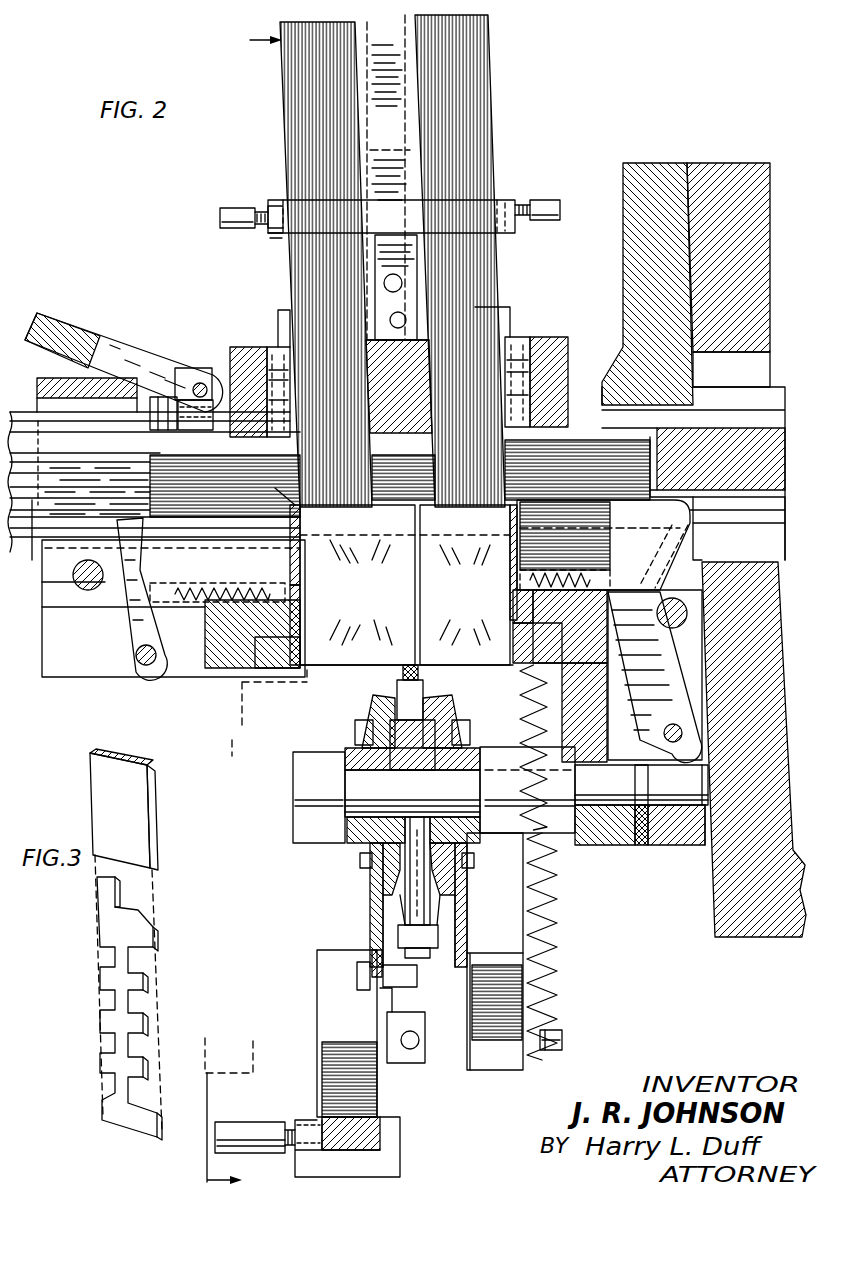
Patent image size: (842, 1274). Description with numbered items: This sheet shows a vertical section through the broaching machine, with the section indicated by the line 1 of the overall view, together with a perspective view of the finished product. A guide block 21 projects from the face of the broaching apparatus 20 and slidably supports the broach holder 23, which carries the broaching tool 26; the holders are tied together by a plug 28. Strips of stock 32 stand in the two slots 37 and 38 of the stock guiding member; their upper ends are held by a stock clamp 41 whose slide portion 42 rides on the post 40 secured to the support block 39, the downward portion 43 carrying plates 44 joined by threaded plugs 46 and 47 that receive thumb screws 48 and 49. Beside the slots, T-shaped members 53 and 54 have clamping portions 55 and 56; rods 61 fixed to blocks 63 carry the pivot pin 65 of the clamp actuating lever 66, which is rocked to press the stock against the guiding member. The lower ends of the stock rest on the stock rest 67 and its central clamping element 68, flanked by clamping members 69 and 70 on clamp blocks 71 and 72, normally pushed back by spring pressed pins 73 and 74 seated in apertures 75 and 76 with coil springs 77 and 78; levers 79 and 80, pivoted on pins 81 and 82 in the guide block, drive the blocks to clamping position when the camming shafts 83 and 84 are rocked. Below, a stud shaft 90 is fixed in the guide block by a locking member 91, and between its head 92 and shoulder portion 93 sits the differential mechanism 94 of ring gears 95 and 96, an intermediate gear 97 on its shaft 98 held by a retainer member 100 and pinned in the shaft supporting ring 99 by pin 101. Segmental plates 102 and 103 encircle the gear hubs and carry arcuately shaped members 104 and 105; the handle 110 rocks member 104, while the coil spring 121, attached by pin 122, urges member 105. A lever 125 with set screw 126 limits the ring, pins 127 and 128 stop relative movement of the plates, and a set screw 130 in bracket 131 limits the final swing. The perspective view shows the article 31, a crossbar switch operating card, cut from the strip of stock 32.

In FIG. 2, the section line 1- 1 is at (256, 611).
In FIG. 2, the broaching apparatus 20 is at (748, 166).
In FIG. 2, the guide block 21 is at (650, 190).
In FIG. 2, the broach holder 23 is at (22, 412).
In FIG. 2, the broaching tool 26 is at (32, 540).
In FIG. 2, the plug 28 is at (740, 430).
In FIG. 3, the article 31 is at (166, 936).
In FIG. 2, the piece of stock 32 is at (320, 296).
In FIG. 3, the piece of stock 32 is at (160, 830).
In FIG. 2, the slot 37 is at (432, 439).
In FIG. 2, the slot 38 is at (399, 395).
In FIG. 2, the support block 39 is at (500, 307).
In FIG. 2, the post 40 is at (400, 246).
In FIG. 2, the stock clamp 41 is at (506, 194).
In FIG. 2, the slide portion 42 is at (410, 105).
In FIG. 2, the downwardly extending portion 43 is at (413, 180).
In FIG. 2, the plate 44 is at (290, 230).
In FIG. 2, the threaded plug 46 is at (505, 231).
In FIG. 2, the threaded plug 47 is at (268, 204).
In FIG. 2, the thumb screw 48 is at (545, 205).
In FIG. 2, the thumb screw 49 is at (225, 216).
In FIG. 2, the T-shaped member 53 is at (238, 352).
In FIG. 2, the T-shaped member 54 is at (566, 350).
In FIG. 2, the clamping portion 55 is at (280, 356).
In FIG. 2, the clamping portion 56 is at (522, 346).
In FIG. 2, the rod 61 is at (165, 396).
In FIG. 2, the block 63 is at (198, 368).
In FIG. 2, the pivot pin 65 is at (194, 385).
In FIG. 2, the clamp actuating lever 66 is at (70, 330).
In FIG. 2, the stock rest 67 is at (325, 668).
In FIG. 2, the central clamping element 68 is at (386, 505).
In FIG. 2, the clamping member 69 is at (520, 505).
In FIG. 2, the clamping member 70 is at (292, 510).
In FIG. 2, the clamp block 71 is at (530, 547).
In FIG. 2, the clamp block 72 is at (285, 557).
In FIG. 2, the spring pressed pin 73 is at (520, 587).
In FIG. 2, the spring pressed pin 74 is at (290, 578).
In FIG. 2, the aperture 75 is at (600, 583).
In FIG. 2, the aperture 76 is at (255, 585).
In FIG. 2, the coil spring 77 is at (582, 575).
In FIG. 2, the coil spring 78 is at (218, 585).
In FIG. 2, the lever 79 is at (652, 690).
In FIG. 2, the lever 80 is at (128, 625).
In FIG. 2, the pin 81 is at (664, 735).
In FIG. 2, the pin 82 is at (147, 668).
In FIG. 2, the camming shaft 83 is at (683, 627).
In FIG. 2, the camming shaft 84 is at (95, 592).
In FIG. 2, the stud shaft 90 is at (690, 800).
In FIG. 2, the locking member 91 is at (643, 830).
In FIG. 2, the head 92 is at (305, 793).
In FIG. 2, the shoulder portion 93 is at (572, 840).
In FIG. 2, the differential mechanism 94 is at (338, 866).
In FIG. 2, the ring gear 95 is at (372, 700).
In FIG. 2, the ring gear 96 is at (455, 700).
In FIG. 2, the intermediate gear 97 is at (415, 898).
In FIG. 2, the intermediate gear shaft 98 is at (420, 910).
In FIG. 2, the shaft supporting ring 99 is at (415, 762).
In FIG. 2, the retainer member 100 is at (398, 935).
In FIG. 2, the pin 101 is at (340, 860).
In FIG. 2, the segmental plate 102 is at (375, 895).
In FIG. 2, the segmental plate 103 is at (460, 880).
In FIG. 2, the arcuately shaped member 104 is at (335, 1120).
In FIG. 2, the arcuately shaped member 105 is at (495, 1062).
In FIG. 2, the handle 110 is at (257, 1135).
In FIG. 2, the coil spring 121 is at (556, 990).
In FIG. 2, the pin 122 is at (562, 1035).
In FIG. 2, the lever 125 is at (420, 690).
In FIG. 2, the set screw 126 is at (402, 675).
In FIG. 2, the pin 127 is at (400, 985).
In FIG. 2, the pin 128 is at (400, 960).
In FIG. 2, the set screw 130 is at (412, 1046).
In FIG. 2, the bracket 131 is at (409, 1055).